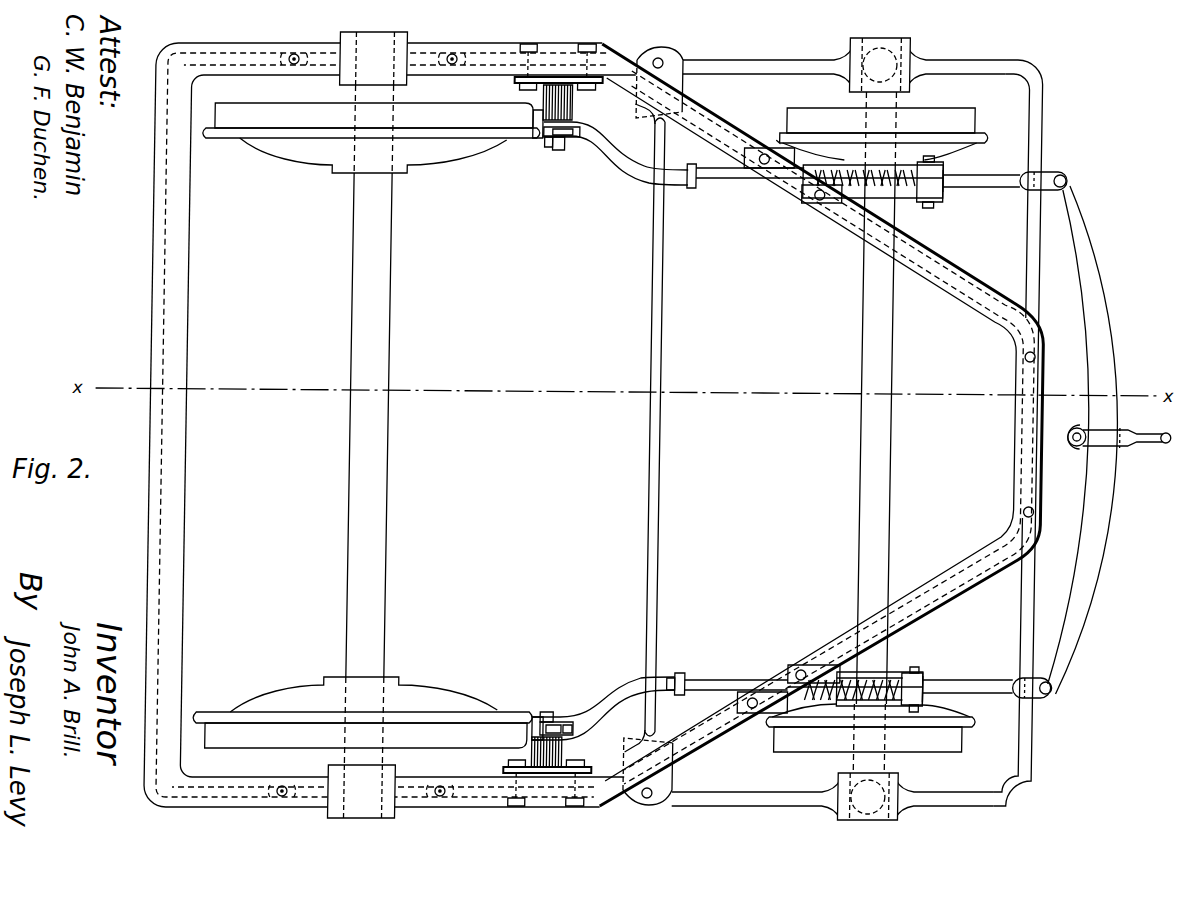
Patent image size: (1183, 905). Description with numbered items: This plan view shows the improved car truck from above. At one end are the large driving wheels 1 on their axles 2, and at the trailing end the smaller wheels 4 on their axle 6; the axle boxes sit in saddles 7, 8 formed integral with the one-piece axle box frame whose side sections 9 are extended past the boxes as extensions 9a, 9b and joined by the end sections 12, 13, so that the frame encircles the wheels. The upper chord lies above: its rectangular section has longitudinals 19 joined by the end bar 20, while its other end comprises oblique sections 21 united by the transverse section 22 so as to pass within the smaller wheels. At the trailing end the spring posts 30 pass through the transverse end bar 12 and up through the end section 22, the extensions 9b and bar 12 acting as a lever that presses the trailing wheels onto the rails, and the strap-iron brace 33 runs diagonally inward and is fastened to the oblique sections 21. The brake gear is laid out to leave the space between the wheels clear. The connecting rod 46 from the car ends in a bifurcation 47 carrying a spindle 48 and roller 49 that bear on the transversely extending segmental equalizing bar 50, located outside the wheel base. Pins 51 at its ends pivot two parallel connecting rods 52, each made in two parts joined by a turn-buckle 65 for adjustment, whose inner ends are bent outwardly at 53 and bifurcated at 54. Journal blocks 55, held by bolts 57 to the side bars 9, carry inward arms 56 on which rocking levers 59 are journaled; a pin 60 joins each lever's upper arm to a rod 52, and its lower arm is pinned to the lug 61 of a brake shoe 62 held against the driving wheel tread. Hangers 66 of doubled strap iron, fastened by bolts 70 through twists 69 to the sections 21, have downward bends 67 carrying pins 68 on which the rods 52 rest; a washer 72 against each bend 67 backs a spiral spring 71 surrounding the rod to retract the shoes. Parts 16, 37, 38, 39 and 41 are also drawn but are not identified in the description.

The driving wheels 1 is at (454, 126).
The axles 2 is at (382, 592).
The trailing wheels 4 is at (960, 119).
The axle 6 is at (892, 478).
The saddle 7 is at (390, 86).
The saddle 8 is at (870, 48).
The axle box frame side section 9 is at (740, 792).
The side bar extension 9a is at (252, 50).
The side bar extension 9b is at (975, 66).
The transverse end bar 12 is at (1035, 592).
The end section 13 is at (149, 560).
The journal bearing 16 is at (892, 50).
The longitudinals 19 is at (428, 60).
The end bar 20 is at (187, 578).
The oblique sections 21 is at (776, 676).
The transverse section 22 is at (1014, 444).
The spring posts 30 is at (1036, 356).
The brace 33 is at (829, 427).
The brake beam 37 is at (661, 500).
The brake beam end 38 is at (661, 132).
The bracket 39 is at (676, 62).
The pivot bolt 41 is at (653, 800).
The connecting rod 46 is at (1162, 444).
The bifurcation 47 is at (1112, 447).
The spindle 48 is at (1082, 432).
The roller 49 is at (1073, 448).
The segmental equalizing bar 50 is at (1085, 440).
The pin 51 is at (1044, 433).
The connecting rods 52 is at (690, 188).
The outwardly bent inner ends 53 is at (606, 708).
The bifurcated ends 54 is at (570, 140).
The journal block 55 is at (548, 816).
The arm 56 is at (578, 98).
The bolts 57 is at (531, 48).
The rocking lever 59 is at (542, 148).
The pin 60 is at (556, 150).
The lug 61 is at (868, 435).
The brake shoe 62 is at (528, 118).
The turn-buckle 65 is at (766, 186).
The hangers 66 is at (860, 170).
The bend 67 is at (940, 699).
The pin 68 is at (930, 208).
The twists 69 is at (754, 736).
The bolts 70 is at (762, 152).
The spiral springs 71 is at (880, 170).
The washer 72 is at (923, 433).